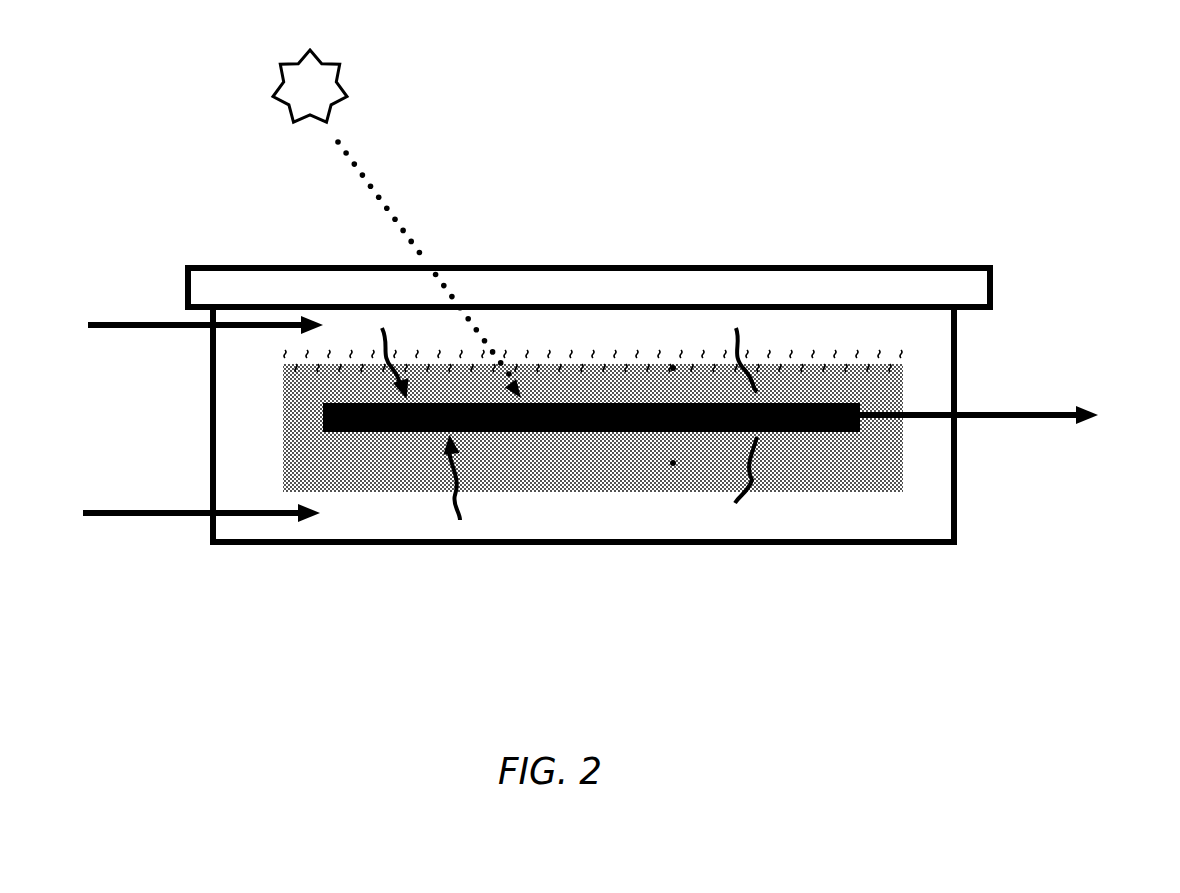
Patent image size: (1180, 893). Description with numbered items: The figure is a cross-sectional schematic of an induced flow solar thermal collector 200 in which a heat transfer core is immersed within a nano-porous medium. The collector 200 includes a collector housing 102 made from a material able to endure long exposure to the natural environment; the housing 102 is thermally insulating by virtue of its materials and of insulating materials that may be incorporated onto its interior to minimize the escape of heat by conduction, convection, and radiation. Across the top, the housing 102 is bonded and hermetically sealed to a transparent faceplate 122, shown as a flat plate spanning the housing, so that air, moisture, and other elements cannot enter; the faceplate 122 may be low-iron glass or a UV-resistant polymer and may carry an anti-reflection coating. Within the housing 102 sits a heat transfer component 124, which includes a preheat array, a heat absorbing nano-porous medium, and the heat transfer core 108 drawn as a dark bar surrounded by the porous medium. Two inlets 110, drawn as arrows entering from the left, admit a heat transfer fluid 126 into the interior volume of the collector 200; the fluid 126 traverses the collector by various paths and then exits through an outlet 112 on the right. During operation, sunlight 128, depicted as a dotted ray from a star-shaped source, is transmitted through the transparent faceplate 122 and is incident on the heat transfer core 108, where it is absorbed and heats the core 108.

The induced flow solar thermal collector 200 is at (130, 153).
The collector housing 102 is at (680, 545).
The heat transfer core 108 is at (625, 450).
The inlets 110 is at (138, 322).
The outlet 112 is at (956, 413).
The transparent faceplate 122 is at (806, 282).
The heat transfer component 124 is at (856, 514).
The heat transfer fluid 126 is at (260, 510).
The sunlight 128 is at (365, 173).